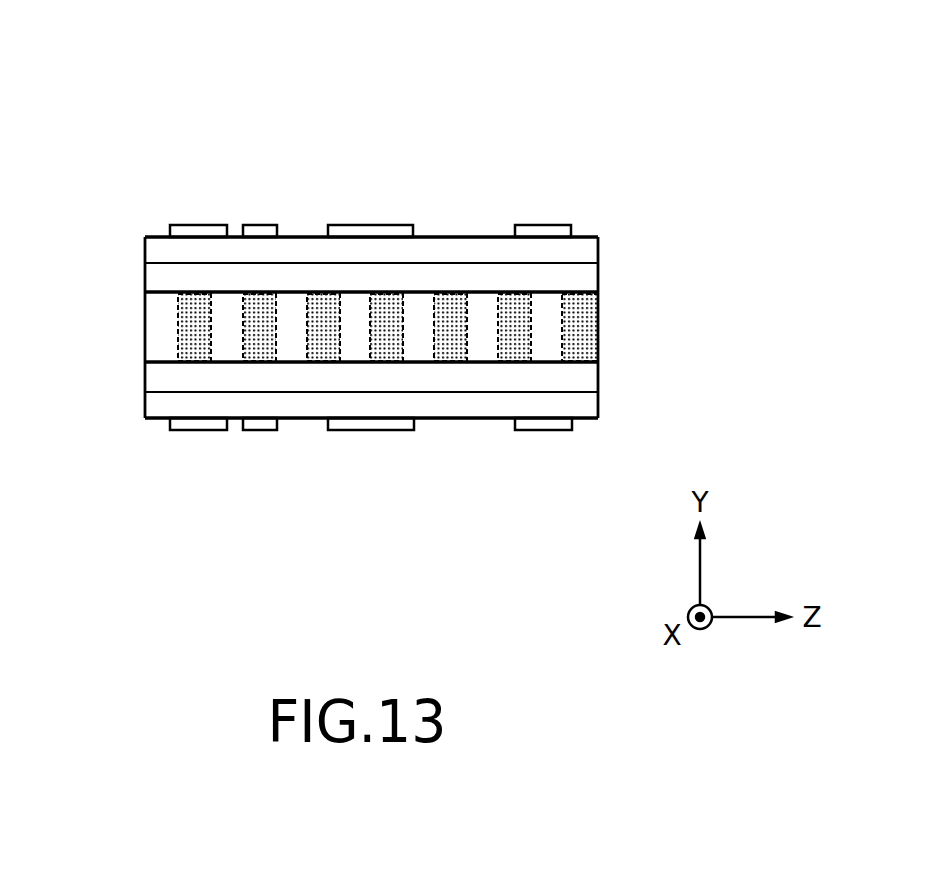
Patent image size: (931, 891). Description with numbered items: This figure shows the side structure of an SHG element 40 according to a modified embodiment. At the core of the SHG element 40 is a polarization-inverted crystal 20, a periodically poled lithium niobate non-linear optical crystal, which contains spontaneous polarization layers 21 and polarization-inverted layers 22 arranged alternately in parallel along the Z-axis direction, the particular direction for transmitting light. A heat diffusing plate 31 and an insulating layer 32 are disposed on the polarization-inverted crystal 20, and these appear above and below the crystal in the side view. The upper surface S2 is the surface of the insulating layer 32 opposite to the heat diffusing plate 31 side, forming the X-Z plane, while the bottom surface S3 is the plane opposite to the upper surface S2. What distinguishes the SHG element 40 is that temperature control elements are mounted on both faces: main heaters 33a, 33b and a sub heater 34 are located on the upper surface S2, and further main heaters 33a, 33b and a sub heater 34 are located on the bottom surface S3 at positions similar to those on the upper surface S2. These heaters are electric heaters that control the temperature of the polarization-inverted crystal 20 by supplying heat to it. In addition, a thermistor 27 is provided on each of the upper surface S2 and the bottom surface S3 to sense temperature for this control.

The SHG element 40 is at (192, 103).
The polarization-inverted crystal 20 is at (133, 335).
The spontaneous polarization layer 21 is at (223, 298).
The polarization-inverted layer 22 is at (190, 363).
The heat diffusing plate 31 is at (590, 280).
The insulating layer 32 is at (590, 253).
The main heater 33a is at (199, 230).
The main heater 33b is at (548, 230).
The thermistor 27 is at (262, 229).
The sub heater 34 is at (376, 228).
The upper surface S2 is at (160, 237).
The bottom surface S3 is at (155, 420).